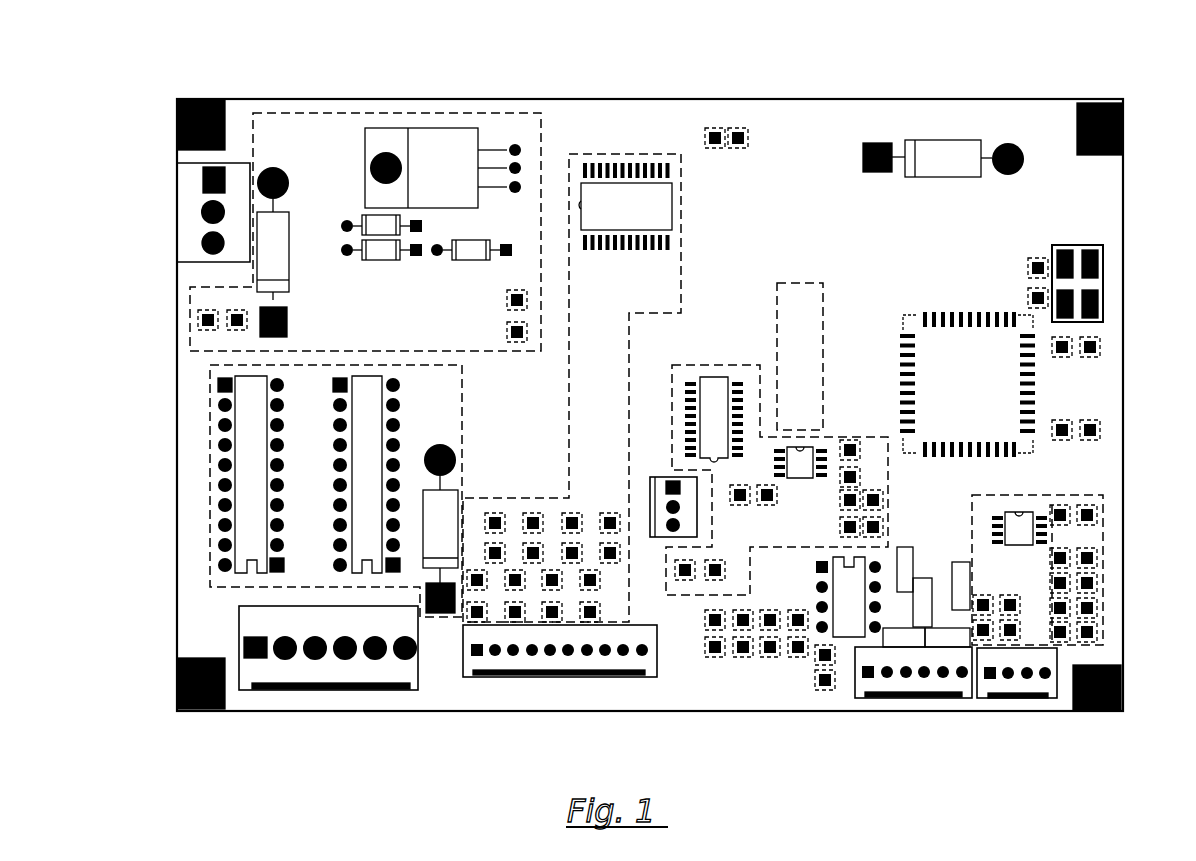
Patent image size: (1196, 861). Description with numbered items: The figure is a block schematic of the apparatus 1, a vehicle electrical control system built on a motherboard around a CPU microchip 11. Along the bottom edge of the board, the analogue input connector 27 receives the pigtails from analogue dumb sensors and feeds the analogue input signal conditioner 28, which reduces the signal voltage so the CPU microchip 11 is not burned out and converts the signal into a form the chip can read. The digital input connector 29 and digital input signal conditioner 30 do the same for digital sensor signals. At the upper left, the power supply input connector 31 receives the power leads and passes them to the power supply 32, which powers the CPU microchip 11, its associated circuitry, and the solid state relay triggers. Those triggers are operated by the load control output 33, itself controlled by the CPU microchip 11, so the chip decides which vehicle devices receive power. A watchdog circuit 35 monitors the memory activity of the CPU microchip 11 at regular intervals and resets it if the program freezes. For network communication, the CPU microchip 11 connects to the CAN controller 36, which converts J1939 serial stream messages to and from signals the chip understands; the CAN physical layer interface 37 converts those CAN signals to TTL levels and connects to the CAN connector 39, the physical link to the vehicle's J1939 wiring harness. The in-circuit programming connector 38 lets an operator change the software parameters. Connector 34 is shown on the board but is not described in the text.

The apparatus 1 is at (318, 78).
The CPU microchip 11 is at (984, 402).
The analogue input connector 27 is at (1022, 683).
The analogue input signal conditioner 28 is at (1098, 500).
The digital input connector 29 is at (565, 660).
The digital input signal conditioner 30 is at (675, 243).
The power supply input connector 31 is at (195, 173).
The power supply 32 is at (455, 113).
The load control output 33 is at (447, 405).
The connector 34 is at (341, 663).
The watchdog circuit 35 is at (847, 588).
The CAN controller 36 is at (817, 297).
The CAN physical layer interface 37 is at (716, 365).
The in-circuit programming connector 38 is at (922, 683).
The CAN connector 39 is at (663, 483).